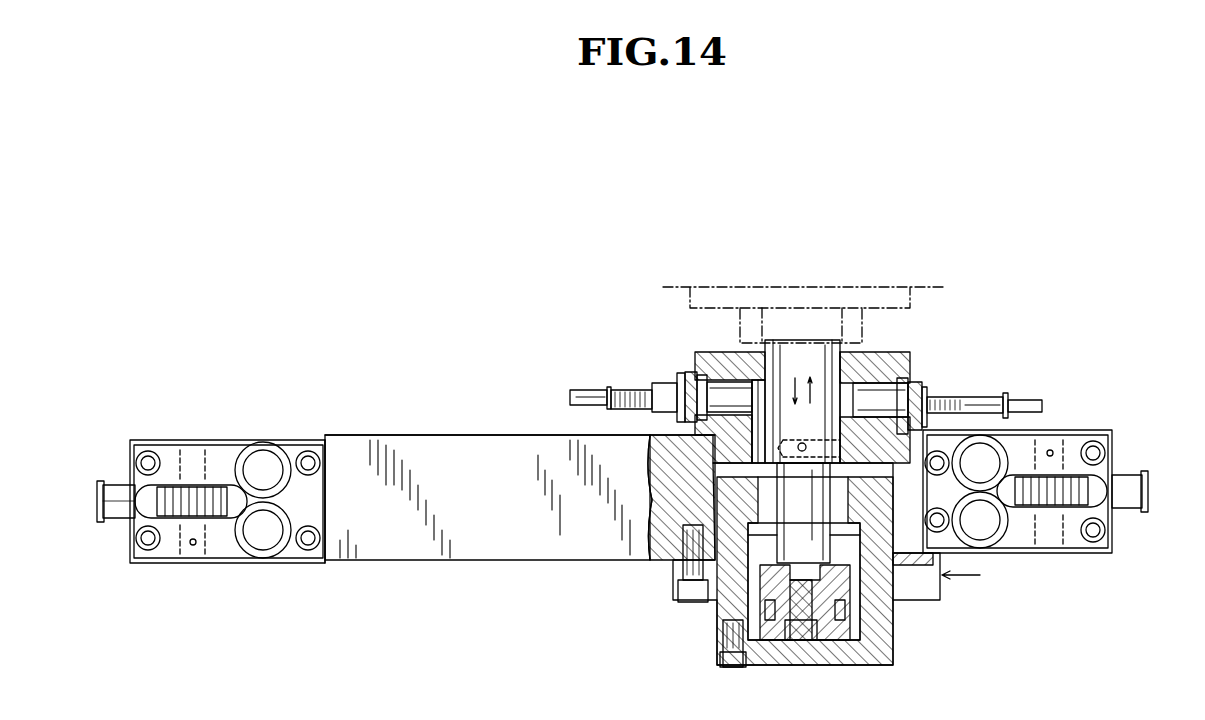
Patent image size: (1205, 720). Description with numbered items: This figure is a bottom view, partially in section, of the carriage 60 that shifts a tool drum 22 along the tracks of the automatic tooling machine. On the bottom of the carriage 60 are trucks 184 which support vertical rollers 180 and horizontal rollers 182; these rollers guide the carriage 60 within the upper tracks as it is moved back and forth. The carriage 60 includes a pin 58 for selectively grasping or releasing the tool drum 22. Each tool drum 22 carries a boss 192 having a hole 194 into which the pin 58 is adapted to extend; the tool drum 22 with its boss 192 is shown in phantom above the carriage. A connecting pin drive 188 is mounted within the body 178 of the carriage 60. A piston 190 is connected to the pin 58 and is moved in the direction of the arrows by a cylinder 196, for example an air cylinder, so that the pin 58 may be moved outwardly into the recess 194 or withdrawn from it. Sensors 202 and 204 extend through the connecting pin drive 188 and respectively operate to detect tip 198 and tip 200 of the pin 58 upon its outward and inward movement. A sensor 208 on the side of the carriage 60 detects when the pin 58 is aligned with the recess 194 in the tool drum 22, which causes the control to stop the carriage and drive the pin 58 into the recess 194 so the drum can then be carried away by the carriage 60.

The tool drum 22 is at (713, 280).
The pin 58 is at (817, 353).
The carriage 60 is at (483, 432).
The body 178 is at (470, 535).
The vertical rollers 180 is at (178, 505).
The horizontal rollers 182 is at (263, 548).
The trucks 184 is at (217, 455).
The connecting pin drive 188 is at (860, 375).
The piston 190 is at (693, 600).
The boss 192 is at (773, 297).
The hole 194 is at (822, 322).
The cylinder 196 is at (893, 600).
The tip 198 is at (917, 383).
The tip 200 is at (780, 368).
The sensor 202 is at (953, 393).
The sensor 204 is at (660, 382).
The sensor 208 is at (115, 495).